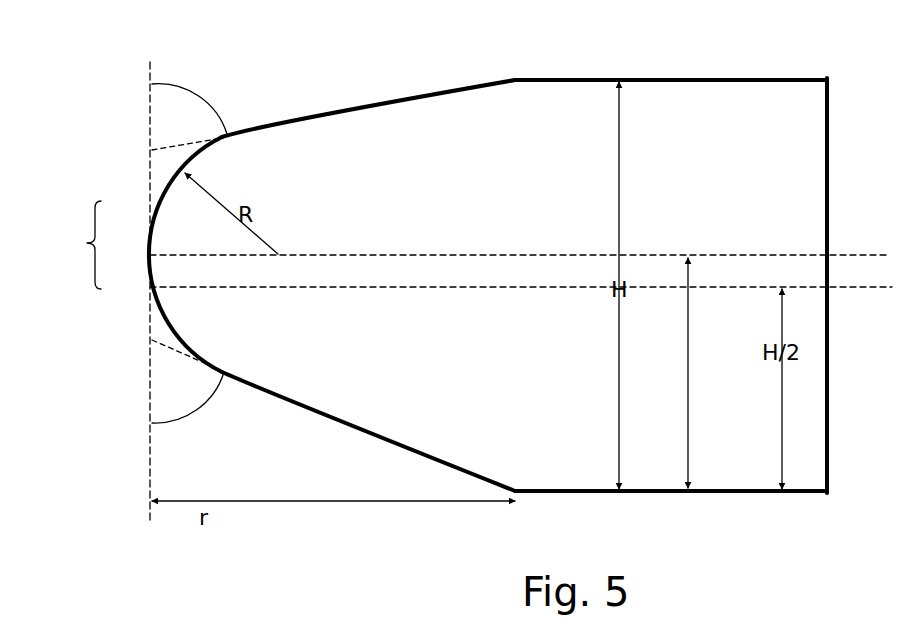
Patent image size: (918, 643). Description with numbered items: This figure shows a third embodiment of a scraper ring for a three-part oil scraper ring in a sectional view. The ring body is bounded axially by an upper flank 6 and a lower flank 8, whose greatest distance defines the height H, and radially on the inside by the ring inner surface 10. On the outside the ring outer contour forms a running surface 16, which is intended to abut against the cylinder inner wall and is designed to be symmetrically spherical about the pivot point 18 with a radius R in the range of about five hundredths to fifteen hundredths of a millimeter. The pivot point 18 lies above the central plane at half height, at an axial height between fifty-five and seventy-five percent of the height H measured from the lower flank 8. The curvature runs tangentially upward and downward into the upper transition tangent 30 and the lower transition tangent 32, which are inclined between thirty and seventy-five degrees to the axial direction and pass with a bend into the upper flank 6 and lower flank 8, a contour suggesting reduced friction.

The upper flank 6 is at (671, 66).
The lower flank 8 is at (671, 511).
The ring inner surface 10 is at (850, 285).
The running surface 16 is at (65, 245).
The pivot point 18 is at (152, 258).
The upper transition tangent 30 is at (342, 110).
The lower transition tangent 32 is at (343, 425).